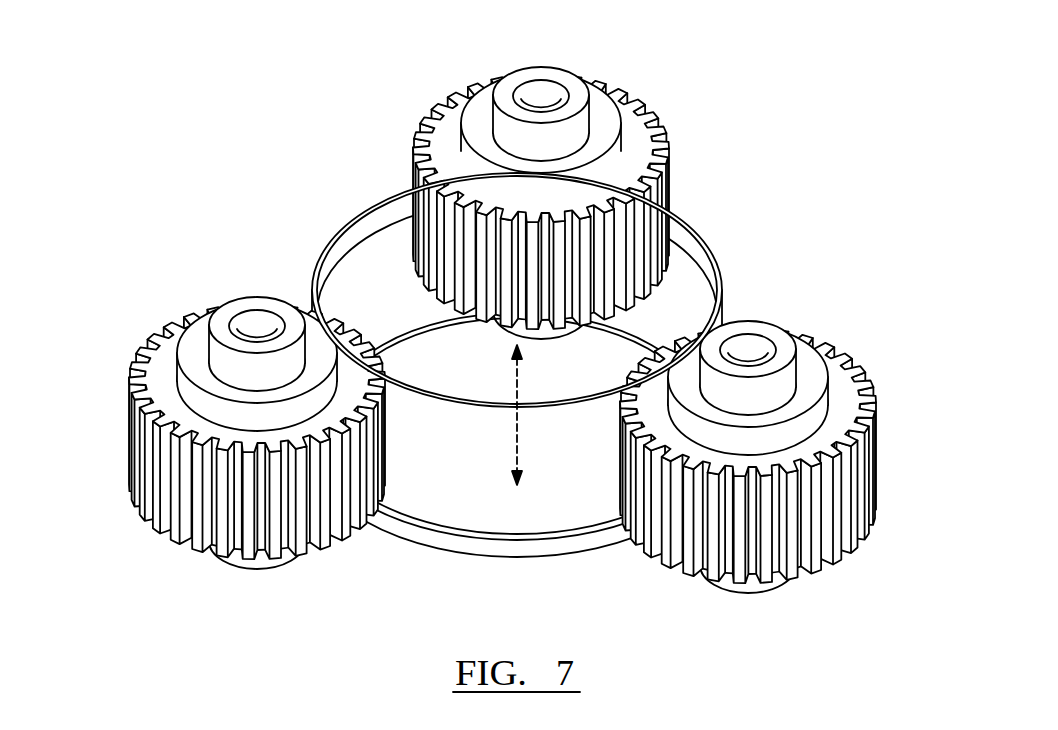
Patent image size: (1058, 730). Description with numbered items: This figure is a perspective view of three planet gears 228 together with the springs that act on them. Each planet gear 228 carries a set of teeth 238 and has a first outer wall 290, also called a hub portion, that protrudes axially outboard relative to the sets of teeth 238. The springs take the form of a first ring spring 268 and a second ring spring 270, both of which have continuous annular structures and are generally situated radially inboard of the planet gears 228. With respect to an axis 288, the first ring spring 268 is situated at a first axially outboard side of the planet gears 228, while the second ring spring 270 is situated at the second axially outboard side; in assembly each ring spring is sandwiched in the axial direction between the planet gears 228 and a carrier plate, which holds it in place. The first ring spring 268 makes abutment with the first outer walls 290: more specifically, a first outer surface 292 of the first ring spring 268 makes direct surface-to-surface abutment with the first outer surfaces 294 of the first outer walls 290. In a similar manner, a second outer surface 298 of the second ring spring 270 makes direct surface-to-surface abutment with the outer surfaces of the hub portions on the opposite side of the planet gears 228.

The planet gear 228 is at (665, 138).
The sets of teeth 238 is at (197, 525).
The first ring spring 268 is at (368, 223).
The second ring spring 270 is at (418, 542).
The axis 288 is at (513, 455).
The first outer wall 290 is at (600, 117).
The first outer surface 292 is at (556, 407).
The first outer surface 294 is at (468, 158).
The second outer surface 298 is at (573, 550).